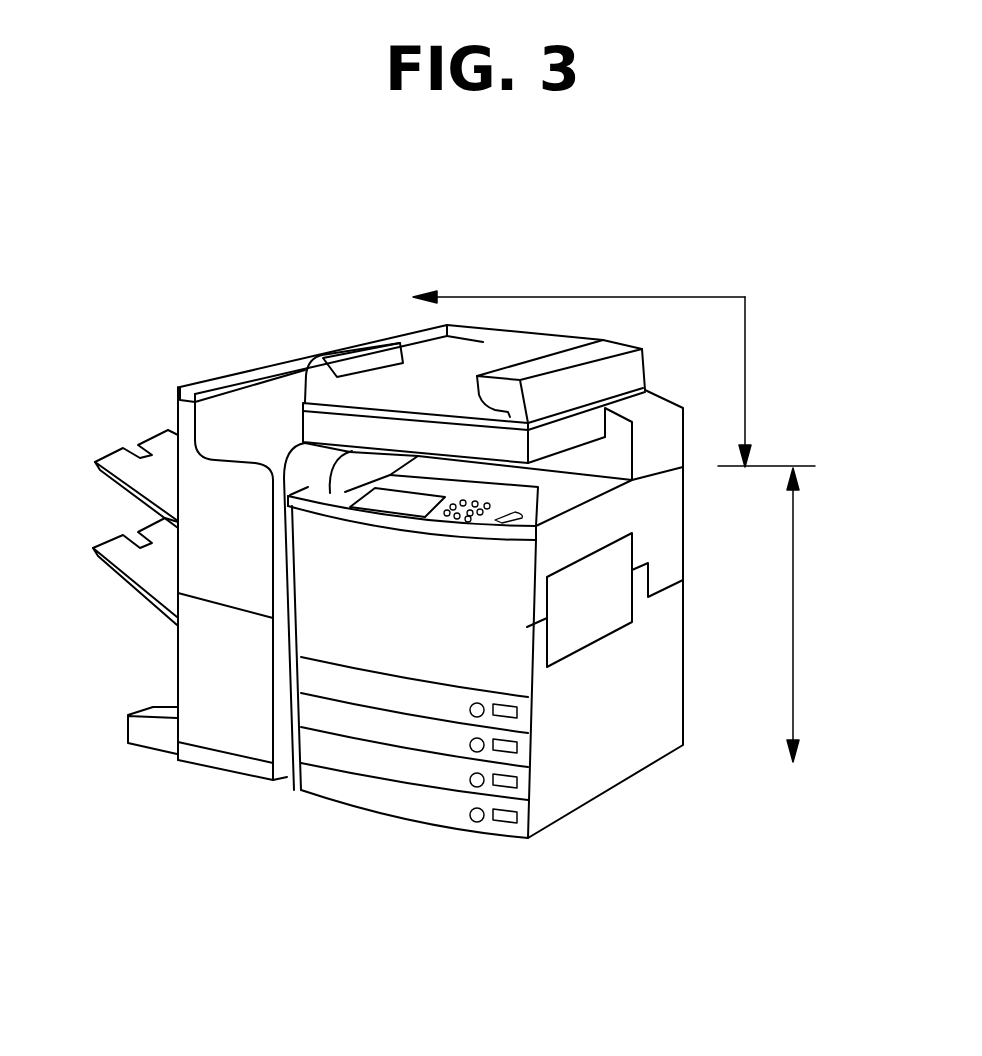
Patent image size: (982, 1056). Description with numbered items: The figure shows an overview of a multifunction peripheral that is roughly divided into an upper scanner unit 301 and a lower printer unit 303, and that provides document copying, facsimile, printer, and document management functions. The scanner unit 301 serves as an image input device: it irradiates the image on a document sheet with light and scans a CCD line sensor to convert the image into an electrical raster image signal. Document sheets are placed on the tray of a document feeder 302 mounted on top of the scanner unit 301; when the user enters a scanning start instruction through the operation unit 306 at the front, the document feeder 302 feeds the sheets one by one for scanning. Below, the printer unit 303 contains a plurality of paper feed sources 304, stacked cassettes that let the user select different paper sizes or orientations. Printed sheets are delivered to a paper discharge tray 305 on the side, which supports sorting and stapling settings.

The scanner unit 301 is at (645, 297).
The document feeder 302 is at (362, 345).
The printer unit 303 is at (793, 590).
The paper feed sources 304 is at (491, 829).
The paper discharge tray 305 is at (105, 456).
The operation unit 306 is at (528, 507).